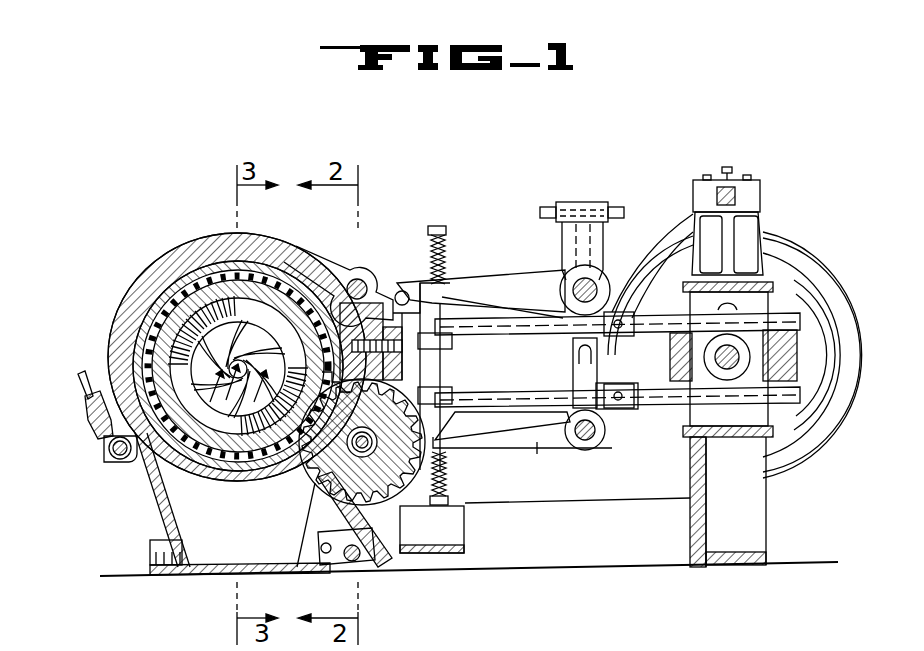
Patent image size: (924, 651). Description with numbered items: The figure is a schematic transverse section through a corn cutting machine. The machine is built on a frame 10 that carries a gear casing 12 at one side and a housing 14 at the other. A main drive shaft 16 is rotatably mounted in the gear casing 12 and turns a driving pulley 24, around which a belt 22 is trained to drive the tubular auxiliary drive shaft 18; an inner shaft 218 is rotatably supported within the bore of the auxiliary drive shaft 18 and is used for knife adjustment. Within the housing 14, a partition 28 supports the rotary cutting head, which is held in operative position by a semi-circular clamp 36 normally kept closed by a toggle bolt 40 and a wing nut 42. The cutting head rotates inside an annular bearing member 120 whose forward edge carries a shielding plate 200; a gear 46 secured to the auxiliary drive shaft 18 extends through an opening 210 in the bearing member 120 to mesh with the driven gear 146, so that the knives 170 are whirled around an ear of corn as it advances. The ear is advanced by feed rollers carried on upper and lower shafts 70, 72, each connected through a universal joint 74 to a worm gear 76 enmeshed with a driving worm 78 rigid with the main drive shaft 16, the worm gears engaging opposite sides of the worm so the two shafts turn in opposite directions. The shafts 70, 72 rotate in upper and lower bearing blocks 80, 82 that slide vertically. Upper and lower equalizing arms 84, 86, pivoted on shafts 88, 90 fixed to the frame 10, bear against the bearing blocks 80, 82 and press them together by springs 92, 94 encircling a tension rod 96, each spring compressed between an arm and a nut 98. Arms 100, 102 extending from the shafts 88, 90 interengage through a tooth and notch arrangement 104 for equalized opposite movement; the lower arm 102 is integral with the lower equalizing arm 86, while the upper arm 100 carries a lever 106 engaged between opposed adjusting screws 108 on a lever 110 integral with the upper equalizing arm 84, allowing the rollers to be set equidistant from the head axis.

The frame 10 is at (650, 499).
The gear casing 12 is at (792, 430).
The housing 14 is at (190, 270).
The main drive shaft 16 is at (746, 352).
The auxiliary drive shaft 18 is at (362, 442).
The belt 22 is at (634, 232).
The driving pulley 24 is at (800, 270).
The partition 28 is at (263, 504).
The semi-circular clamp 36 is at (330, 246).
The toggle bolt 40 is at (104, 440).
The wing nut 42 is at (95, 412).
The gear 46 is at (395, 492).
The upper shaft 70 is at (546, 332).
The lower shaft 72 is at (504, 396).
The universal joint 74 is at (626, 336).
The worm gear 76 is at (748, 310).
The driving worm 78 is at (736, 362).
The upper bearing block 80 is at (406, 300).
The lower bearing block 82 is at (440, 416).
The upper equalizing arm 84 is at (454, 283).
The lower equalizing arm 86 is at (538, 452).
The shaft 88 is at (572, 290).
The shaft 90 is at (596, 436).
The spring 92 is at (446, 258).
The spring 94 is at (448, 482).
The tension rod 96 is at (444, 456).
The nut 98 is at (442, 229).
The arm 100 is at (573, 352).
The arm 102 is at (620, 410).
The tooth and notch arrangement 104 is at (592, 358).
The lever 106 is at (562, 239).
The adjusting screws 108 is at (630, 200).
The lever 110 is at (562, 253).
The bearing member 120 is at (216, 260).
The driven gear 146 is at (150, 312).
The knives 170 is at (238, 380).
The shielding plate 200 is at (170, 332).
The opening 210 is at (308, 460).
The shaft 218 is at (354, 399).